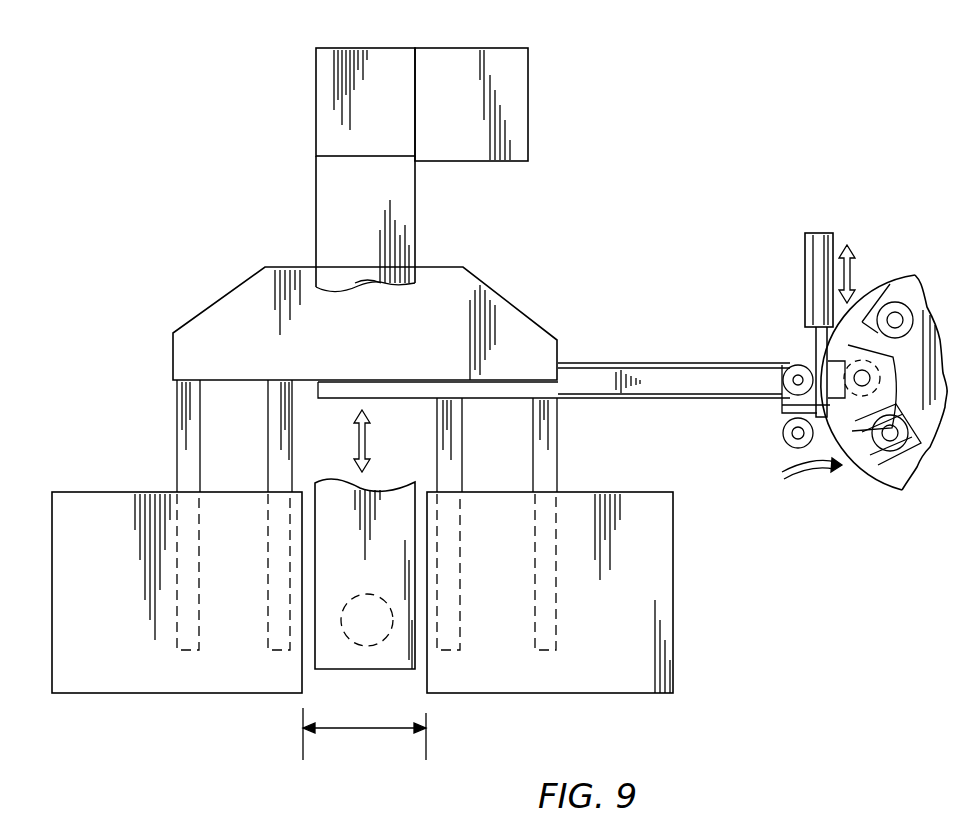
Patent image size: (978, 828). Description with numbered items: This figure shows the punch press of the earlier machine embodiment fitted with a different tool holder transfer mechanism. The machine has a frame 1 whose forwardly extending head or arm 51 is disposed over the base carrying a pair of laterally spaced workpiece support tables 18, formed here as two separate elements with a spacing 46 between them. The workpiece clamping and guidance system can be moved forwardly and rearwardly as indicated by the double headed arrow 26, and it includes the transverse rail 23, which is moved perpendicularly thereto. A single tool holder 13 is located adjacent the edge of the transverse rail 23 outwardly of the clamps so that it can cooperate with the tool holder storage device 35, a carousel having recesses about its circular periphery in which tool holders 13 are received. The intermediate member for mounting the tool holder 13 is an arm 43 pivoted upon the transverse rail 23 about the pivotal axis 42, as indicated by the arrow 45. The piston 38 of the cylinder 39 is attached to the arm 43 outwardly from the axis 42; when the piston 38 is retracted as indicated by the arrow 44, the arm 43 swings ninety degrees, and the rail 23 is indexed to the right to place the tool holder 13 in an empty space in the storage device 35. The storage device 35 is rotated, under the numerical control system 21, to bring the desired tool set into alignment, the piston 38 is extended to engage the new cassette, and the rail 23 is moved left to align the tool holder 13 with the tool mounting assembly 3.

The frame 1 is at (415, 222).
The numerical control system 21 is at (517, 92).
The double headed arrow 26 is at (368, 438).
The workpiece support tables 18 is at (245, 670).
The head or arm 51 is at (390, 670).
The tool mounting assembly 3 is at (363, 600).
The spacing 46 is at (350, 727).
The transverse rail 23 is at (680, 378).
The pivotal axis 42 is at (798, 372).
The arm 43 is at (788, 400).
The tool holder 13 is at (788, 412).
The piston 38 is at (816, 342).
The cylinder 39 is at (803, 278).
The arrow 44 is at (848, 272).
The arrow 45 is at (803, 478).
The tool holder storage device 35 is at (928, 427).